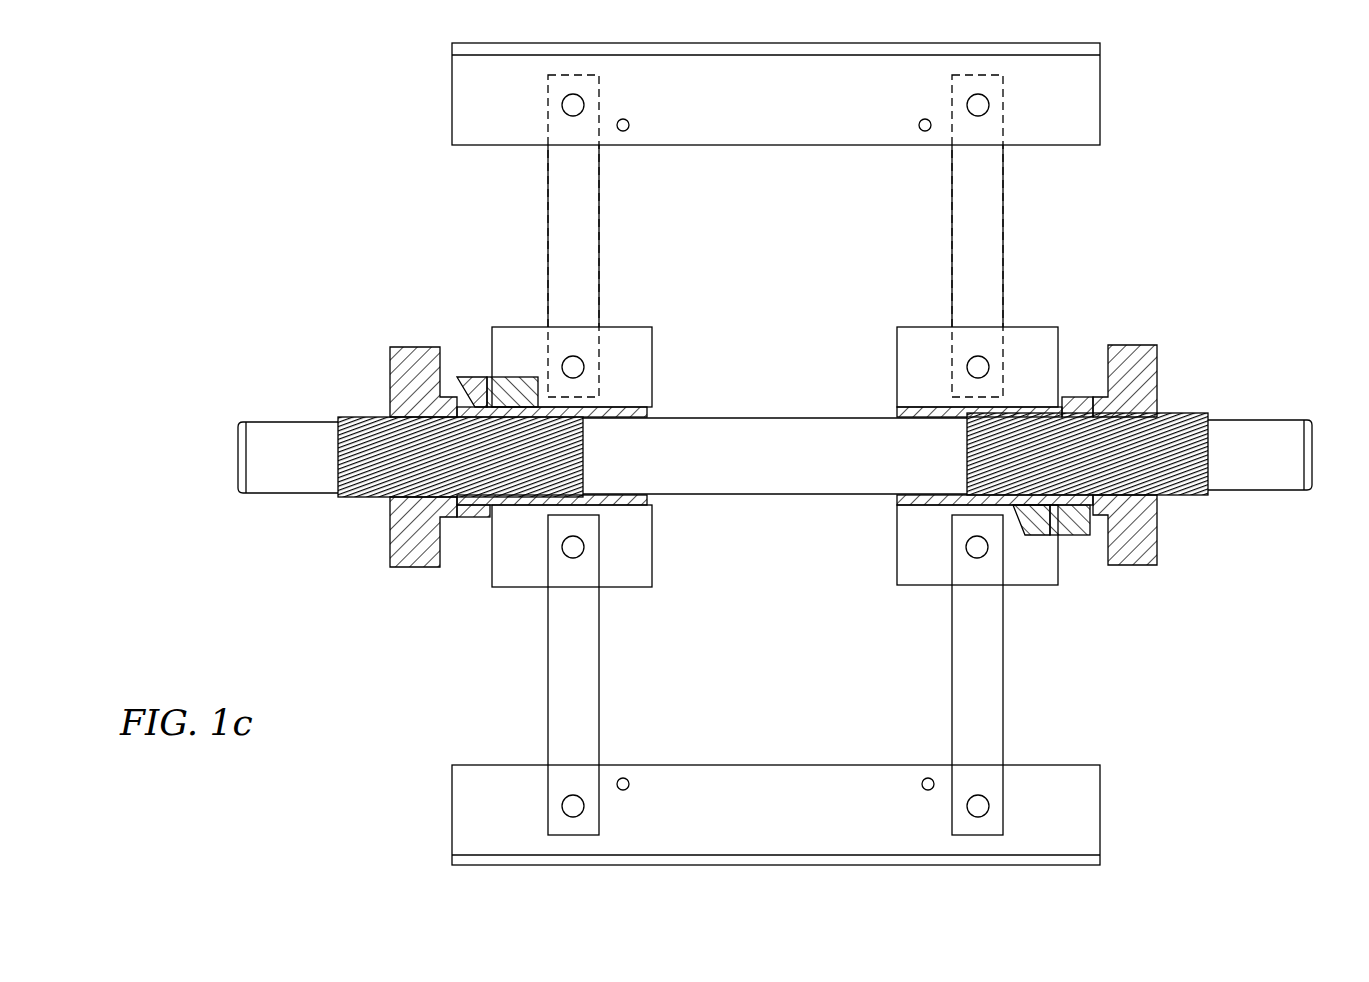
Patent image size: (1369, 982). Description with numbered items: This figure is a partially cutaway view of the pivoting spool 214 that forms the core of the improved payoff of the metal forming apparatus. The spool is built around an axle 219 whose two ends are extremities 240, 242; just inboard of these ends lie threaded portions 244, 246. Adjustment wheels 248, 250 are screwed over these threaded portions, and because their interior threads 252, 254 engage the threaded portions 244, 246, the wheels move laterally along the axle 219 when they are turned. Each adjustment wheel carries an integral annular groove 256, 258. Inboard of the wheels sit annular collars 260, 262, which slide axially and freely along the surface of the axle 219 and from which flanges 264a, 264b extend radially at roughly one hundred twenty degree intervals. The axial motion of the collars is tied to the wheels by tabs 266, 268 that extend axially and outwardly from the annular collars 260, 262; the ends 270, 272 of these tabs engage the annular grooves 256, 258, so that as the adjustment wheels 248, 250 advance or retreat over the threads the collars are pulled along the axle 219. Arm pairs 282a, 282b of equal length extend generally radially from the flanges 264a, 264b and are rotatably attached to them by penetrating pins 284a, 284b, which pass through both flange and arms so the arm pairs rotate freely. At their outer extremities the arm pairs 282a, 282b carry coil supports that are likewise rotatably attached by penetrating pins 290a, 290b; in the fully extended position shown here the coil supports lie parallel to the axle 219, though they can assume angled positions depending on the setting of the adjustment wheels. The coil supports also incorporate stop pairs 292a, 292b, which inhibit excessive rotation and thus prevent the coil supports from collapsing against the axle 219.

The pivoting spool 214 is at (265, 238).
The axle 219 is at (725, 418).
The extremity 240 is at (1283, 478).
The extremity 242 is at (262, 462).
The threaded portion 244 is at (1195, 413).
The threaded portion 246 is at (355, 417).
The adjustment wheel 248 is at (1130, 347).
The adjustment wheel 250 is at (415, 352).
The thread 252 is at (1140, 380).
The thread 254 is at (388, 497).
The annular groove 256 is at (1075, 396).
The annular groove 258 is at (462, 520).
The annular collar 260 is at (895, 503).
The annular collar 262 is at (650, 505).
The flange 264a is at (625, 340).
The flange 264b is at (628, 565).
The tab 266 is at (1035, 540).
The tab 268 is at (535, 378).
The end of tab 270 is at (1075, 540).
The end of tab 272 is at (470, 378).
The arm pair 282a is at (585, 226).
The arm pair 282b is at (585, 668).
The penetrating pin 284a is at (580, 368).
The penetrating pin 284b is at (572, 560).
The penetrating pin 290a is at (573, 112).
The penetrating pin 290b is at (573, 795).
The stop pair 292a is at (623, 131).
The stop pair 292b is at (623, 778).